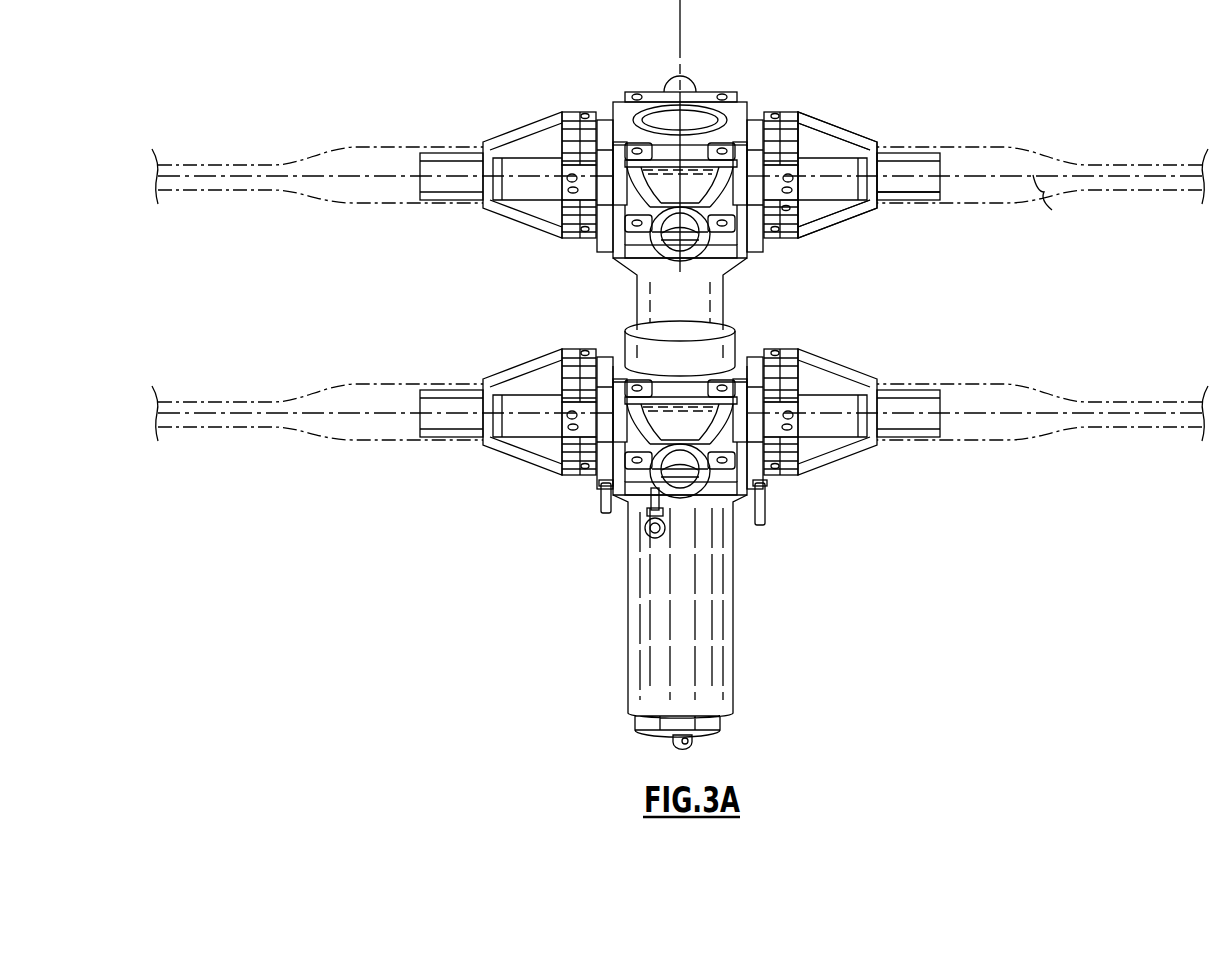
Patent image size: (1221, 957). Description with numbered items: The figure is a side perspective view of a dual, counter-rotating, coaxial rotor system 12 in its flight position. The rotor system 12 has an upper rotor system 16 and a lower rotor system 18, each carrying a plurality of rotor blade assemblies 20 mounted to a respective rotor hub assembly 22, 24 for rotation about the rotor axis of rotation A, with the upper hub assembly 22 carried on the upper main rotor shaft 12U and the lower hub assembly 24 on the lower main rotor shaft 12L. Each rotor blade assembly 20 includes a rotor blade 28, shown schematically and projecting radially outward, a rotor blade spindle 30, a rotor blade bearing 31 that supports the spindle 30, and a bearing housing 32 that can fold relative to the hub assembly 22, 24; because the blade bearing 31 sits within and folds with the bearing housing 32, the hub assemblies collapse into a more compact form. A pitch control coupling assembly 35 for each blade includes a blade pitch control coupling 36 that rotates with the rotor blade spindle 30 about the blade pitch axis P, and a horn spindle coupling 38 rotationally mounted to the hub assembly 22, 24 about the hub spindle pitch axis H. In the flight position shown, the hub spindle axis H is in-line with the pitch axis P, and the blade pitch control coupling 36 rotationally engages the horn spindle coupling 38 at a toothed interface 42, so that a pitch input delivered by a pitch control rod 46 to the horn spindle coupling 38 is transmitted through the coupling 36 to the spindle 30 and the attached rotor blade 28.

The dual, counter-rotating, coaxial rotor system 12 is at (776, 503).
The upper main rotor shaft 12U is at (708, 308).
The lower main rotor shaft 12L is at (723, 693).
The upper rotor system 16 is at (520, 86).
The lower rotor system 18 is at (523, 320).
The rotor blade assembly 20 is at (1055, 97).
The upper rotor hub assembly 22 is at (734, 106).
The lower rotor hub assembly 24 is at (742, 353).
The rotor blade 28 is at (355, 158).
The rotor blade spindle 30 is at (912, 165).
The rotor blade bearing 31 is at (917, 200).
The bearing housing 32 is at (838, 215).
The pitch control coupling assembly 35 is at (779, 143).
The blade pitch control coupling 36 is at (573, 176).
The horn spindle coupling 38 is at (586, 132).
The interface 42 is at (790, 180).
The pitch control rod 46 is at (765, 495).
The rotor axis of rotation A is at (680, 46).
The hub spindle pitch axis H is at (775, 205).
The blade pitch axis P is at (1053, 199).